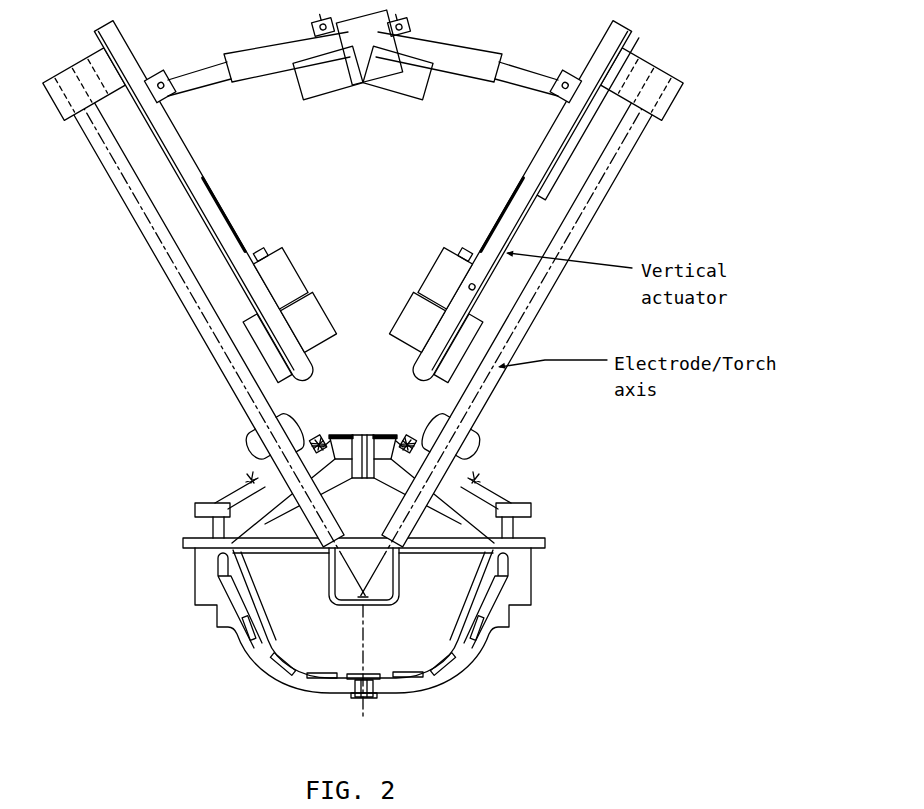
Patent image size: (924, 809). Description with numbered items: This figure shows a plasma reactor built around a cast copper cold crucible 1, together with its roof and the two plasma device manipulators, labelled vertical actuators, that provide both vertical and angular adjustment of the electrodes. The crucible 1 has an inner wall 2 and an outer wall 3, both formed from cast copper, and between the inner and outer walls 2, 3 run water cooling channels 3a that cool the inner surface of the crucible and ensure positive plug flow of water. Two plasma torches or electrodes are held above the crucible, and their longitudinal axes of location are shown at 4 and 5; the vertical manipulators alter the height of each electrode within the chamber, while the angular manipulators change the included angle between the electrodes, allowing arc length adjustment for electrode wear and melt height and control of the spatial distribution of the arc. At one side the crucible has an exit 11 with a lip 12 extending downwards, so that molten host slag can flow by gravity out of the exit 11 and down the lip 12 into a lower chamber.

The crucible 1 is at (257, 670).
The inner wall 2 is at (390, 660).
The outer wall 3 is at (402, 705).
The water cooling channels 3a is at (427, 685).
The longitudinal axis of plasma torch/electrode 4 is at (303, 497).
The longitudinal axis of plasma torch/electrode 5 is at (437, 482).
The exit 11 is at (398, 580).
The lip 12 is at (355, 603).